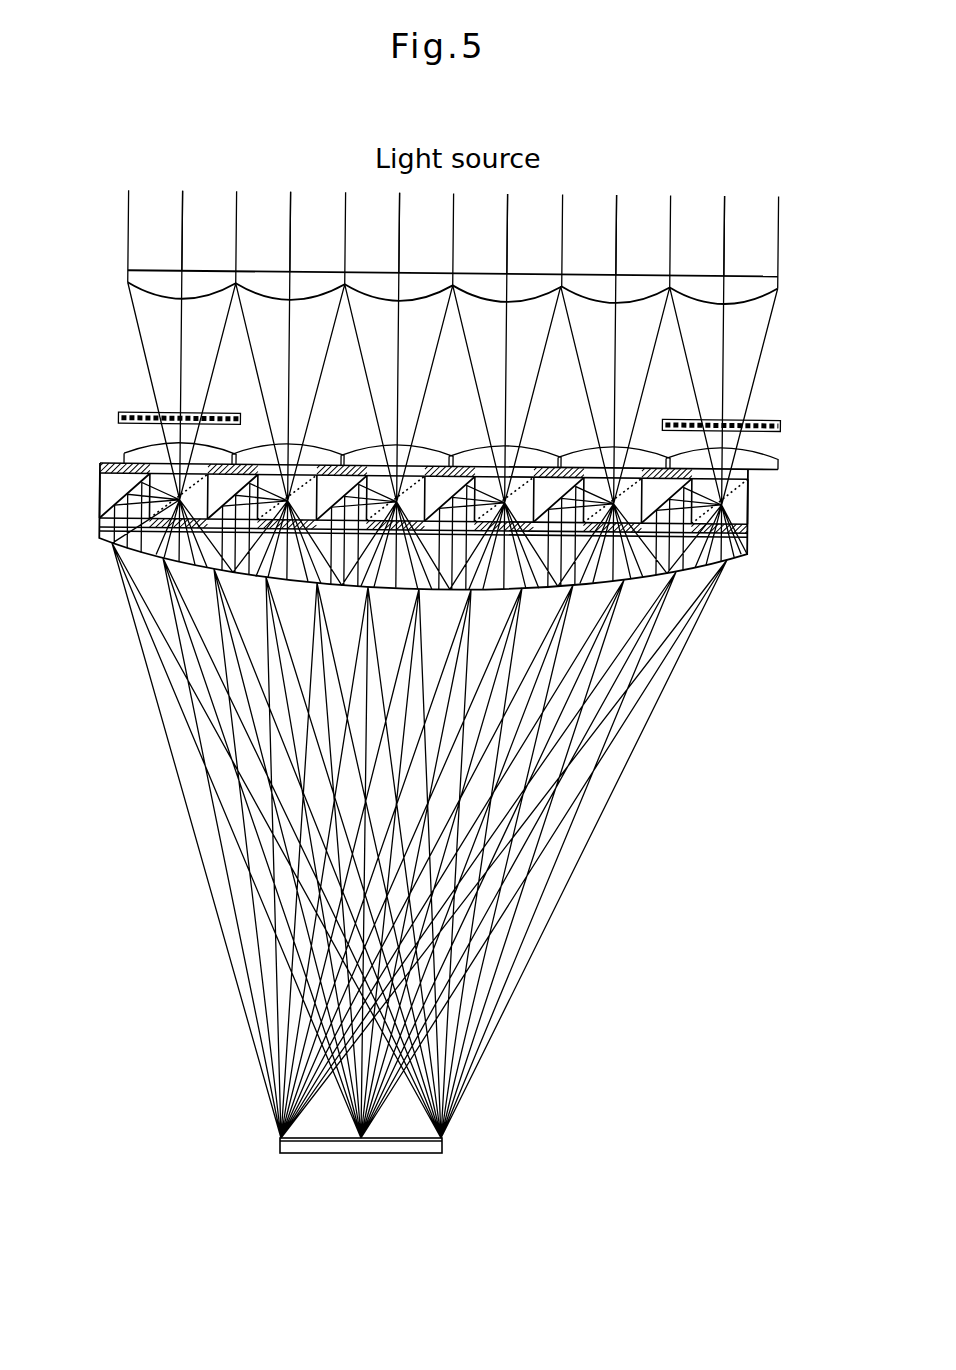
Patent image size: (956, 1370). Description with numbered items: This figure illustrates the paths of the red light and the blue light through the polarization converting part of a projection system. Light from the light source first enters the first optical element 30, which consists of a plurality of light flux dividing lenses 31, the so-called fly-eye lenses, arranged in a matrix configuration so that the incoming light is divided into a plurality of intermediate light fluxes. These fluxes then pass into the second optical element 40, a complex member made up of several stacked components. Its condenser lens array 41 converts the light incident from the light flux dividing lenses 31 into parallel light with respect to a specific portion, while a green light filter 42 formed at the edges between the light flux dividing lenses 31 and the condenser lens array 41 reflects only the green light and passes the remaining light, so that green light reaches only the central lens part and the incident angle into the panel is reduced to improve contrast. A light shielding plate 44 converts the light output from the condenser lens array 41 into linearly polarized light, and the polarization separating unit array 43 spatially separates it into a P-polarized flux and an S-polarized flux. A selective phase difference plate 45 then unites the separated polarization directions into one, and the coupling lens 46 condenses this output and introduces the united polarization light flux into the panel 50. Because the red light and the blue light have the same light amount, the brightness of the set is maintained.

The first optical element 30 is at (800, 233).
The light flux dividing lens 31 is at (128, 276).
The second optical element 40 is at (798, 408).
The condenser lens array 41 is at (763, 465).
The green light filter 42 is at (118, 417).
The polarization separating unit array 43 is at (100, 490).
The light shielding plate 44 is at (100, 463).
The selective phase difference plate 45 is at (100, 529).
The coupling lens 46 is at (102, 540).
The panel 50 is at (443, 1147).